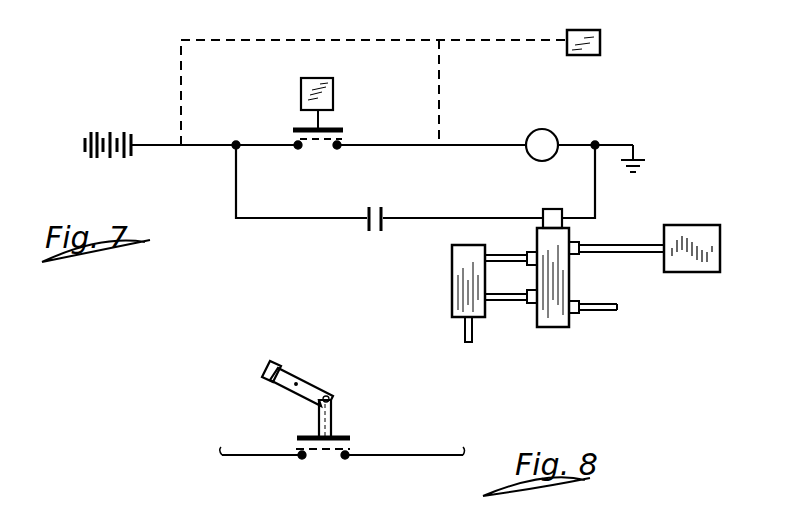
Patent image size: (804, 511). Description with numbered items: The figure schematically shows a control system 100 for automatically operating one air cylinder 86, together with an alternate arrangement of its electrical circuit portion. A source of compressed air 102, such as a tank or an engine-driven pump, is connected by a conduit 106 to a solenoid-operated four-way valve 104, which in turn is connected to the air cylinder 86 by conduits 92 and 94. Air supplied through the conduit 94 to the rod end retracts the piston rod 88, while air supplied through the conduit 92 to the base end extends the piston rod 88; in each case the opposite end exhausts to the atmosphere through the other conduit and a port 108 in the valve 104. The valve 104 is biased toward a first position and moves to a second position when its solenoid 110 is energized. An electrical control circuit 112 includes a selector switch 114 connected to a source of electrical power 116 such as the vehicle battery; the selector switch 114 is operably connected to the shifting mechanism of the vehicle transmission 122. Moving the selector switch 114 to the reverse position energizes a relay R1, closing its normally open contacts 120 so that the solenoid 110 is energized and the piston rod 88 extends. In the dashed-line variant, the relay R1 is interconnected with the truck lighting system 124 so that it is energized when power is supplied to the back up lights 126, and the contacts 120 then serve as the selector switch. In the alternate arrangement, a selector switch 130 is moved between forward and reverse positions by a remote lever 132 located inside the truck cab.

In FIG. 7, the source of electrical power 116 is at (107, 128).
In FIG. 7, the vehicle transmission 122 is at (333, 87).
In FIG. 7, the selector switch 114 is at (345, 127).
In FIG. 7, the truck lighting system 124 is at (502, 13).
In FIG. 7, the truck back up lights 126 is at (600, 42).
In FIG. 7, the electrical control circuit 112 is at (466, 140).
In FIG. 7, the relay R1 is at (548, 131).
In FIG. 7, the control system 100 is at (294, 238).
In FIG. 7, the relay contacts 120 is at (383, 207).
In FIG. 7, the valve solenoid 110 is at (557, 209).
In FIG. 7, the four-way valve 104 is at (558, 281).
In FIG. 7, the air cylinder 86 is at (452, 266).
In FIG. 7, the piston rod 88 is at (475, 326).
In FIG. 7, the conduit 92 is at (512, 254).
In FIG. 7, the conduit 94 is at (520, 294).
In FIG. 7, the conduit 106 is at (631, 245).
In FIG. 7, the port 108 is at (587, 309).
In FIG. 7, the source of compressed air 102 is at (688, 230).
In FIG. 8, the selector switch 130 is at (353, 428).
In FIG. 8, the remote lever 132 is at (288, 390).